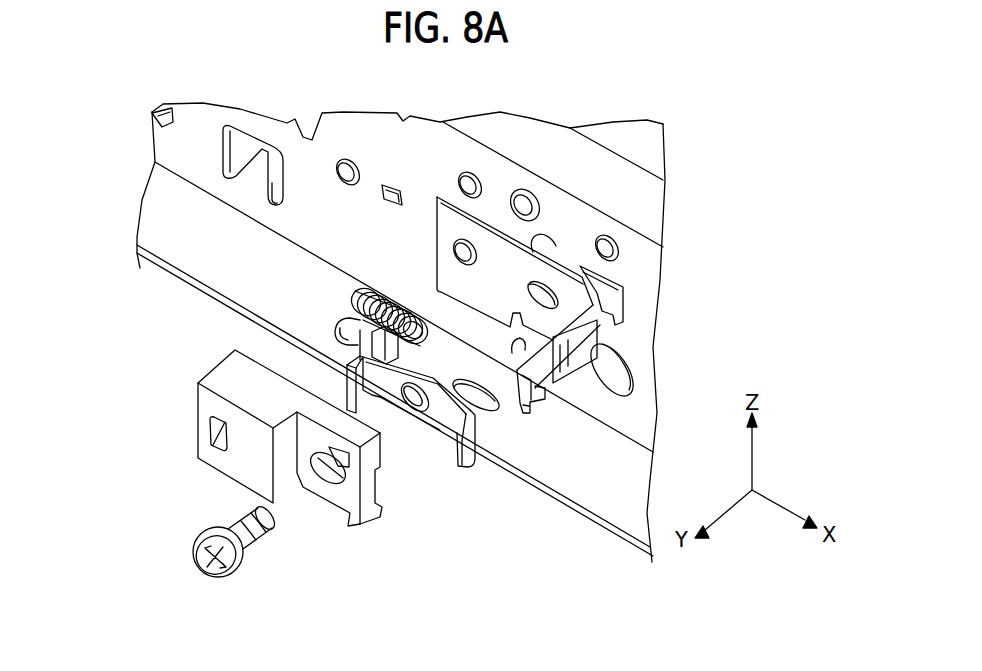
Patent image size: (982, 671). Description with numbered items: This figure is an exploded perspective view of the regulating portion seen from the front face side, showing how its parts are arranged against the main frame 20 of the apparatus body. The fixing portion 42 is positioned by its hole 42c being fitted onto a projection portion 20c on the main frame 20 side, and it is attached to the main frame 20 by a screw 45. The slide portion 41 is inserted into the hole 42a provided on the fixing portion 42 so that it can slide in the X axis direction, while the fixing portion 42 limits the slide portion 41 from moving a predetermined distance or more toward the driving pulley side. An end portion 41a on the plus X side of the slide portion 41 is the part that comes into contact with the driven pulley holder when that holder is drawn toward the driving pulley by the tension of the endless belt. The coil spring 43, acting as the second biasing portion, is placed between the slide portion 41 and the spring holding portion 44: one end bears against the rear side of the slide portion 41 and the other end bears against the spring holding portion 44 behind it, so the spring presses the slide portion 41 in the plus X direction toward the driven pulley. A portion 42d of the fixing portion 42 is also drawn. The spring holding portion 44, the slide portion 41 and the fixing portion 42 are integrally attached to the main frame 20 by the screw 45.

The main frame 20 is at (647, 270).
The projection portion 20c is at (533, 190).
The slide portion 41 is at (440, 425).
The end portion 41a is at (471, 470).
The fixing portion 42 is at (503, 253).
The hole 42a is at (557, 397).
The hole 42c is at (455, 236).
The hook portion of second bracket 42d is at (525, 415).
The coil spring 43 is at (389, 291).
The spring holding portion 44 is at (208, 377).
The screw 45 is at (212, 527).